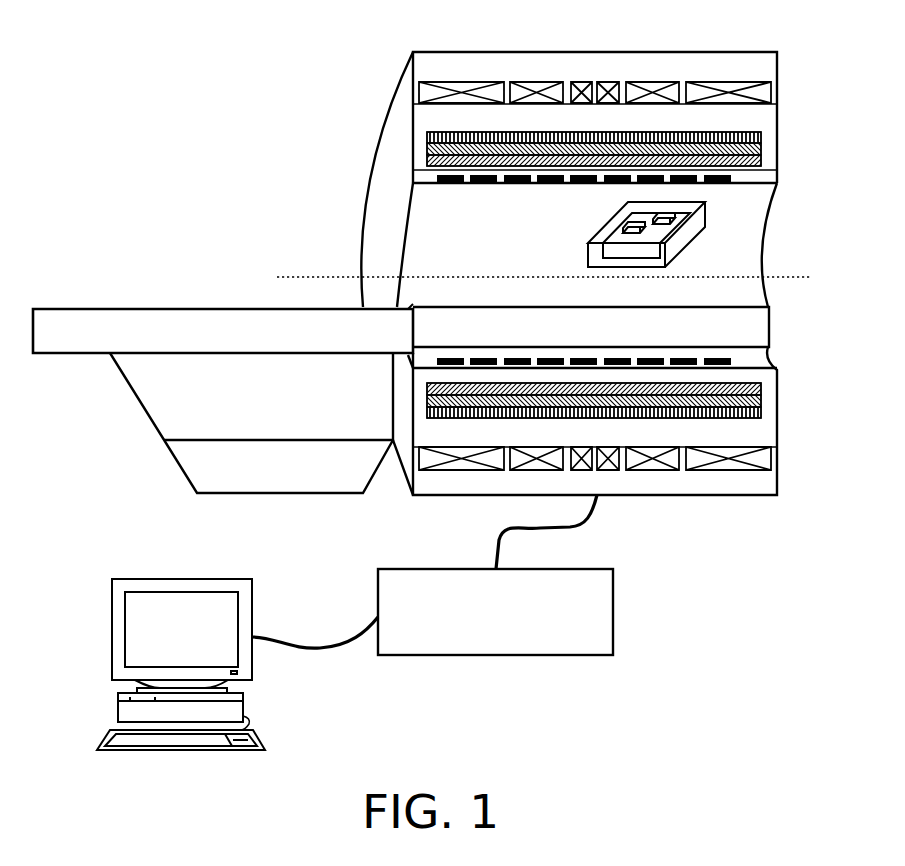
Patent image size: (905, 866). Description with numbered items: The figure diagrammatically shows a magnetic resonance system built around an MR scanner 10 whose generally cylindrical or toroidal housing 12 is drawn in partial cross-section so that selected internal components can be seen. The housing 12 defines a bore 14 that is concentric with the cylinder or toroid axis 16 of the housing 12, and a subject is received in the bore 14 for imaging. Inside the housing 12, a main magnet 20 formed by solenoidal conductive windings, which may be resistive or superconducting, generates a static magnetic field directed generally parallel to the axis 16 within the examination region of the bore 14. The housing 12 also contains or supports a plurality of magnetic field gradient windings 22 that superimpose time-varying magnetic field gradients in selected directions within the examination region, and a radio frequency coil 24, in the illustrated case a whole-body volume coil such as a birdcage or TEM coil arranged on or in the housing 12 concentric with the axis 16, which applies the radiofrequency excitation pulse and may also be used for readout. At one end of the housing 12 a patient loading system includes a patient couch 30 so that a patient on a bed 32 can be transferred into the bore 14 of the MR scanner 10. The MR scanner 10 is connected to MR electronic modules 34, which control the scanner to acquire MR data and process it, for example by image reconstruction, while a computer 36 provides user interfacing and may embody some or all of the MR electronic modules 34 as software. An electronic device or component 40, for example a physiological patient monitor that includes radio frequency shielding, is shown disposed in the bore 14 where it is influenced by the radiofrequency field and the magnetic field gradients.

The MR scanner 10 is at (295, 88).
The housing 12 is at (386, 119).
The bore 14 is at (446, 248).
The cylinder or toroid axis 16 is at (306, 276).
The main magnet 20 is at (462, 82).
The magnetic field gradient windings 22 is at (781, 131).
The radio frequency coil 24 is at (437, 178).
The patient couch 30 is at (105, 273).
The bed 32 is at (188, 307).
The MR electronic modules 34 is at (613, 612).
The computer 36 is at (182, 577).
The electronic device or component 40 is at (718, 238).